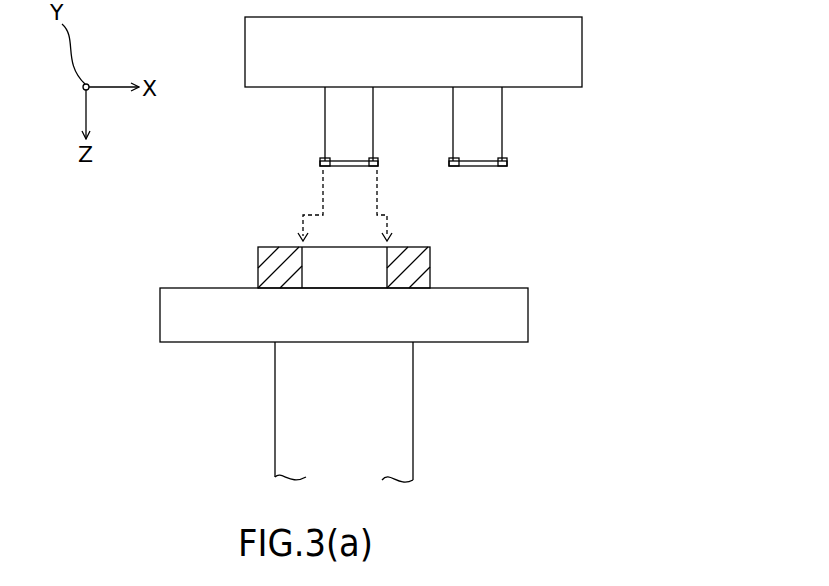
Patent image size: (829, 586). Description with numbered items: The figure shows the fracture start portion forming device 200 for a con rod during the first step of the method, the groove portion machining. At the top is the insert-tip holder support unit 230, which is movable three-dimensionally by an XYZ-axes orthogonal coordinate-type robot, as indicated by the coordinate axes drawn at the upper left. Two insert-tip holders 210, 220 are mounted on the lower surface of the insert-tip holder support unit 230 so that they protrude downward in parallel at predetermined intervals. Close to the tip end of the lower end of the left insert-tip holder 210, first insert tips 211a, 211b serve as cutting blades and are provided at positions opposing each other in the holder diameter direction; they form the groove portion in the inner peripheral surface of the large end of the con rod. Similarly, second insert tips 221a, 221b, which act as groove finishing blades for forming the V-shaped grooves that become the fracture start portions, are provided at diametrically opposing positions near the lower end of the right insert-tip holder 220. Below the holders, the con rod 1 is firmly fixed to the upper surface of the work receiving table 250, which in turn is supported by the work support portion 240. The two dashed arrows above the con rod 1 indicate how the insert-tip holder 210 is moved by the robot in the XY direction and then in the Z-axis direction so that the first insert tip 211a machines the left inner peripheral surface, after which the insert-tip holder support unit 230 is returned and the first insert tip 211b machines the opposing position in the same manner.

The con rod 1 is at (430, 262).
The fracture start portion forming device 200 is at (603, 185).
The insert-tip holder 210 is at (325, 103).
The first insert tip 211a is at (320, 161).
The first insert tip 211b is at (410, 150).
The insert-tip holder 220 is at (502, 103).
The second insert tip 221a is at (440, 166).
The second insert tip 221b is at (507, 163).
The insert-tip holder support unit 230 is at (582, 45).
The work support portion 240 is at (413, 405).
The work receiving table 250 is at (528, 315).